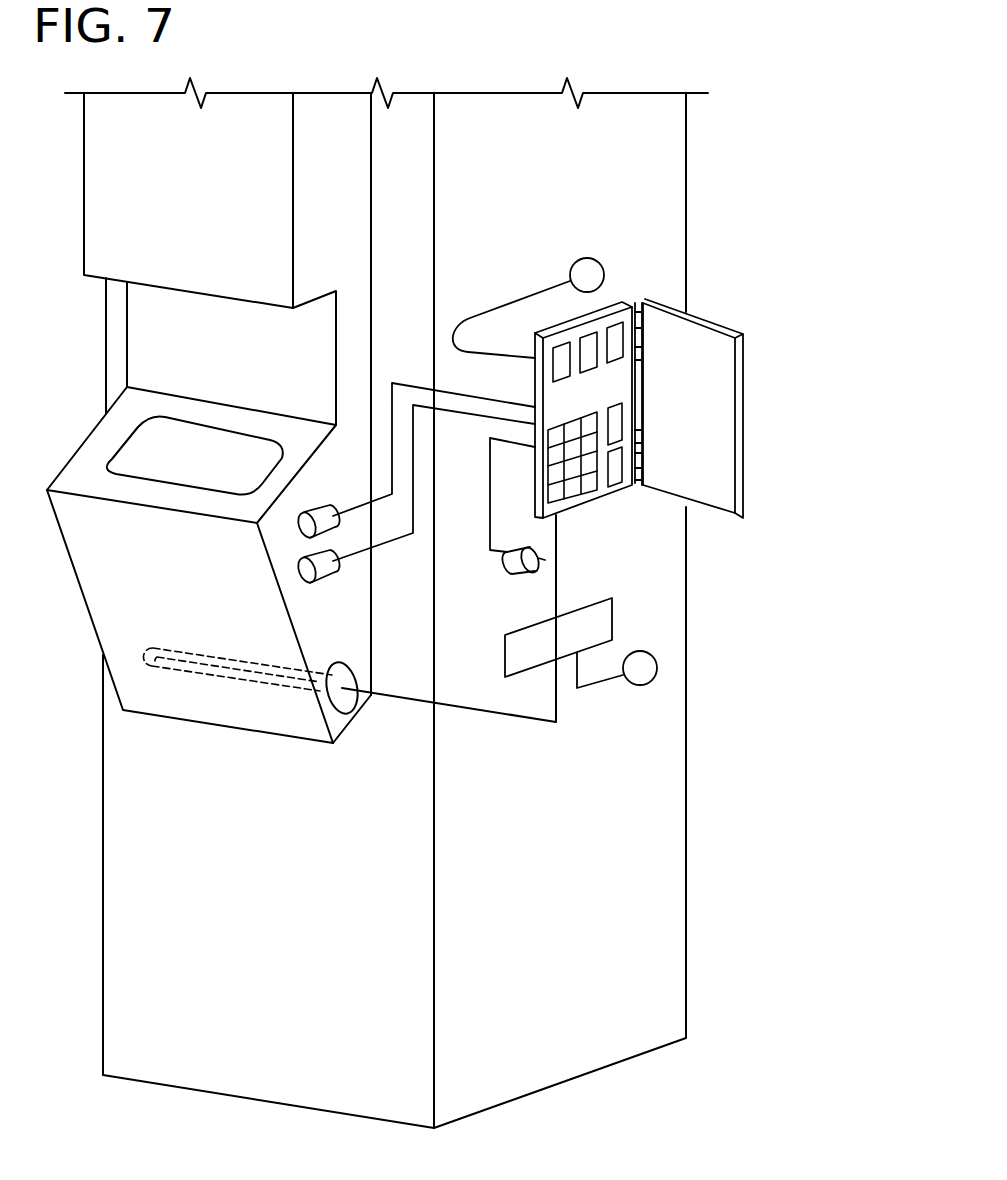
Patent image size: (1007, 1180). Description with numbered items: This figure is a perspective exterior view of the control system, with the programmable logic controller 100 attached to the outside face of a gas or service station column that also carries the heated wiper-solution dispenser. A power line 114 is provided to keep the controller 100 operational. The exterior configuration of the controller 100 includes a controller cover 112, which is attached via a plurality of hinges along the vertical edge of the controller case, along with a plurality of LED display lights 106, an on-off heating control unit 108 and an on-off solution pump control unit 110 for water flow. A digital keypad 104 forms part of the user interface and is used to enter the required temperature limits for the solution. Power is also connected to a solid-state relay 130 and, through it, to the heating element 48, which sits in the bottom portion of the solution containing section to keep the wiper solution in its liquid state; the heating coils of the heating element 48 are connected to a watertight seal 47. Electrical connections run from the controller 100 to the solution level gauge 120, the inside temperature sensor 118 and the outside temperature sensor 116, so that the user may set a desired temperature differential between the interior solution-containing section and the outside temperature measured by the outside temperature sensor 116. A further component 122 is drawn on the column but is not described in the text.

The watertight seal 47 is at (350, 713).
The heating element 48 is at (225, 676).
The programmable logic controller 100 is at (573, 490).
The digital keypad 104 is at (608, 495).
The LED display lights 106 is at (620, 343).
The on-off heating control unit 108 is at (622, 421).
The on-off solution pump control unit 110 is at (622, 468).
The controller cover 112 is at (718, 367).
The power line 114 is at (533, 292).
The outside temperature sensor 116 is at (513, 570).
The inside temperature sensor 118 is at (307, 570).
The solution level gauge 120 is at (307, 525).
The pump 122 is at (607, 682).
The solid-state relay 130 is at (613, 622).